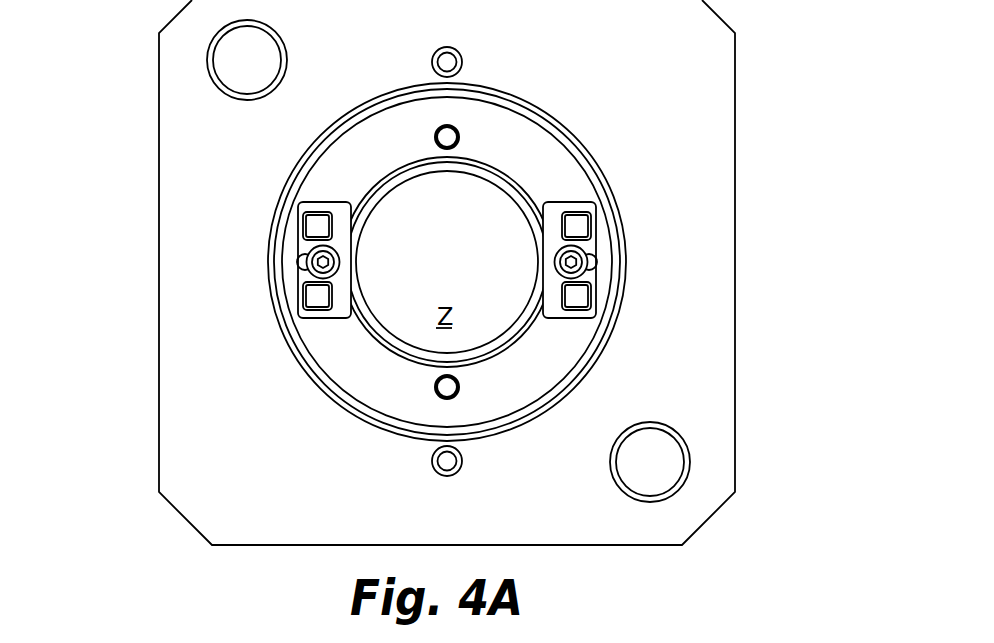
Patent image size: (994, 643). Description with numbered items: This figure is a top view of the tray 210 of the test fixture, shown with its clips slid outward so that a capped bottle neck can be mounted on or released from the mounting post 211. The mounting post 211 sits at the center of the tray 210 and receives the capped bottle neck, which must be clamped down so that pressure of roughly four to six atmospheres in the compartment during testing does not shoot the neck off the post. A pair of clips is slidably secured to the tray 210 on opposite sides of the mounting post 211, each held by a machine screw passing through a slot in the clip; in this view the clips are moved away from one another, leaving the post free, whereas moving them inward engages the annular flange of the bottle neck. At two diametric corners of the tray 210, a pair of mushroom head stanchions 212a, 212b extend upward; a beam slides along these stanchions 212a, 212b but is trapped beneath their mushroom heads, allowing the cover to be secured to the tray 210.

The tray 210 is at (703, 62).
The mounting post 211 is at (407, 215).
The mushroom head stanchion 212a is at (228, 60).
The mushroom head stanchion 212b is at (652, 455).